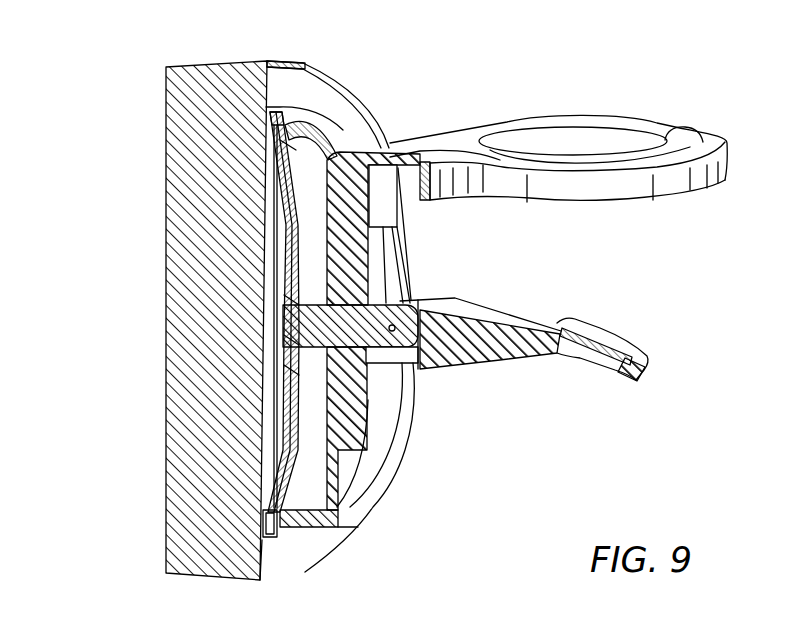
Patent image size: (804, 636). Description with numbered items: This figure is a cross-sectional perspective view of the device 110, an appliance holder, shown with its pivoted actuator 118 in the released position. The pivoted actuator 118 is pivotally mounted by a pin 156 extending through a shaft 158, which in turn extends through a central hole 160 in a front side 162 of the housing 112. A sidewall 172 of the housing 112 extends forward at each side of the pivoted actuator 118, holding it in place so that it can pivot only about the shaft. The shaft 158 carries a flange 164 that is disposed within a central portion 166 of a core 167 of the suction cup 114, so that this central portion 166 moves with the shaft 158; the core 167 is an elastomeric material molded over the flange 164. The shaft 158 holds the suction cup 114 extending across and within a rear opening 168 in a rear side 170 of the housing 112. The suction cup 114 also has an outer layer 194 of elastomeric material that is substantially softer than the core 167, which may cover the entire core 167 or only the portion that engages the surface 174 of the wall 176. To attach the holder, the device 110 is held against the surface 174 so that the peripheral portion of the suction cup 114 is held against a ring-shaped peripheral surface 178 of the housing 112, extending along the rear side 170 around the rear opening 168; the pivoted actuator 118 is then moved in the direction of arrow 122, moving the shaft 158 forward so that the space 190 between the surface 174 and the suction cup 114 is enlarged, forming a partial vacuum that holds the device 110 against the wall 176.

The device 110 is at (407, 92).
The housing 112 is at (336, 518).
The suction cup 114 is at (273, 458).
The pivoted actuator 118 is at (517, 363).
The arrow 122 is at (673, 388).
The pin 156 is at (490, 300).
The shaft 158 is at (380, 353).
The central hole 160 is at (385, 262).
The front side 162 is at (402, 378).
The flange 164 is at (283, 405).
The central portion 166 is at (288, 338).
The core 167 is at (284, 302).
The rear opening 168 is at (298, 148).
The rear side 170 is at (274, 122).
The sidewall 172 is at (410, 297).
The surface 174 is at (260, 555).
The wall 176 is at (268, 93).
The ring-shaped peripheral surface 178 is at (277, 520).
The space 190 is at (270, 268).
The outer layer 194 is at (280, 374).